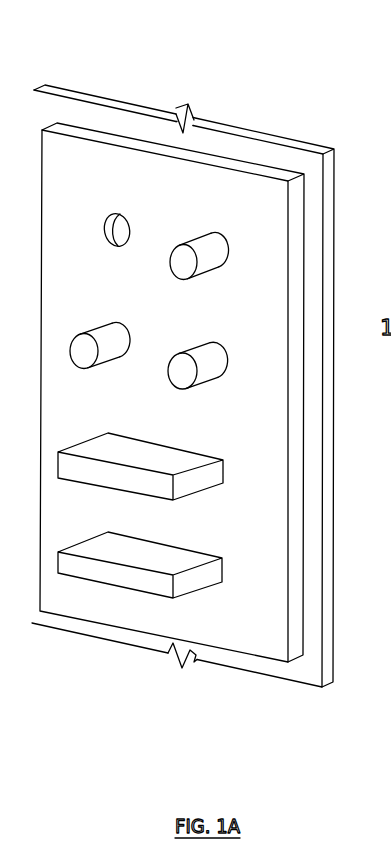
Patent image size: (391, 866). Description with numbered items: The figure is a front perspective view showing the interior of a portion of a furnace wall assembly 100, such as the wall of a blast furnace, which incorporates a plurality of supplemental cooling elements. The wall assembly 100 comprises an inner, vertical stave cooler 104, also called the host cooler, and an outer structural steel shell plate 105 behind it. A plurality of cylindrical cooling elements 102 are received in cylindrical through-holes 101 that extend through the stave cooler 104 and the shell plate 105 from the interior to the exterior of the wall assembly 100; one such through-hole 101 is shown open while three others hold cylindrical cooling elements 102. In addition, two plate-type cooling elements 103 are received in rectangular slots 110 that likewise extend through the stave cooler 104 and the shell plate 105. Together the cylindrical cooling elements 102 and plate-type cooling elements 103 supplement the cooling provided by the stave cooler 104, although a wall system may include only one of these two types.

The furnace wall assembly 100 is at (95, 72).
The cylindrical through-hole 101 is at (111, 226).
The cylindrical cooling element 102 is at (210, 247).
The plate-type cooling element 103 is at (164, 565).
The stave cooler 104 is at (210, 625).
The shell plate 105 is at (313, 658).
The rectangular slot 110 is at (130, 438).